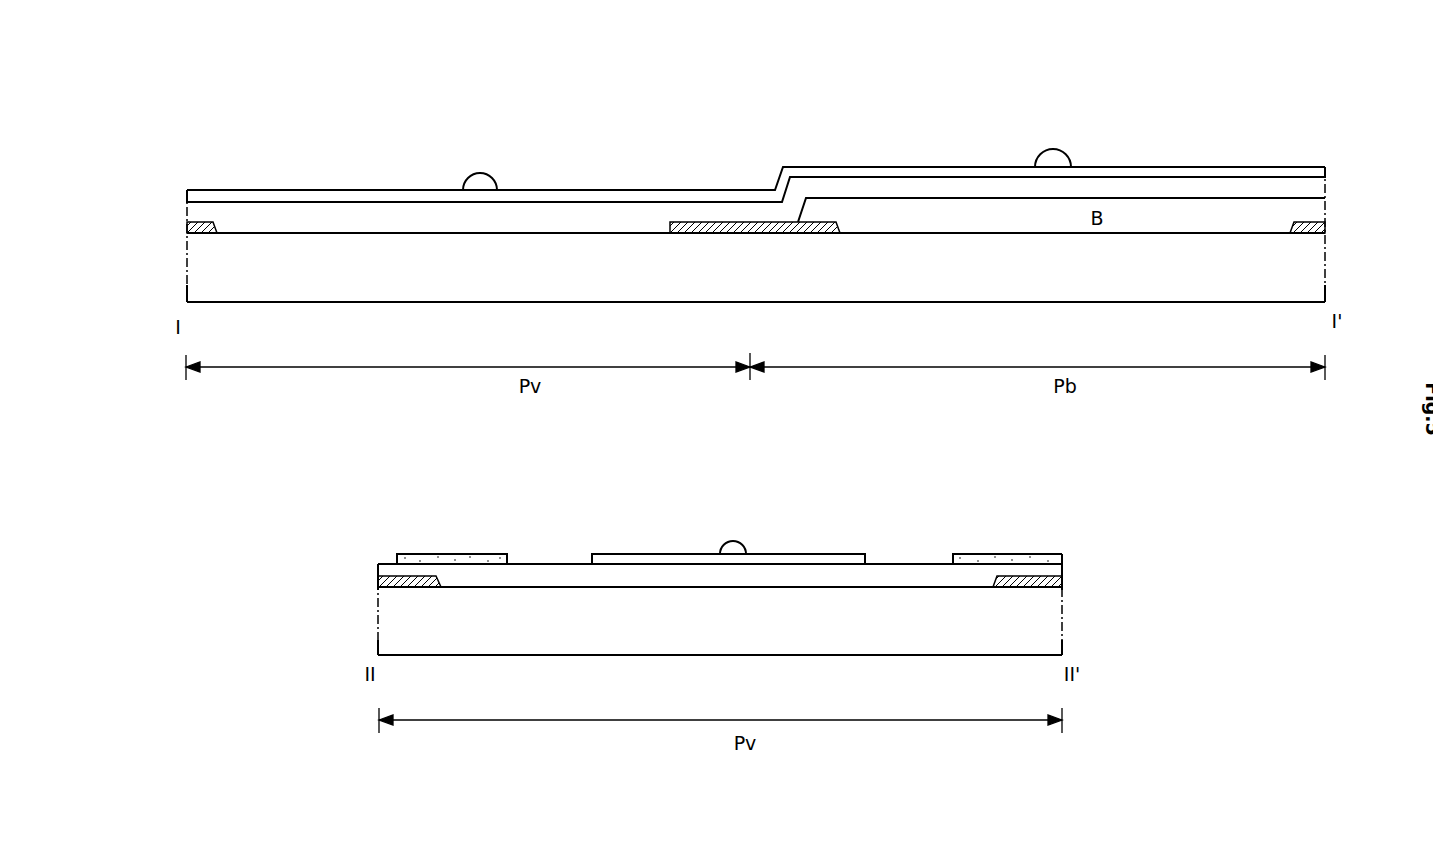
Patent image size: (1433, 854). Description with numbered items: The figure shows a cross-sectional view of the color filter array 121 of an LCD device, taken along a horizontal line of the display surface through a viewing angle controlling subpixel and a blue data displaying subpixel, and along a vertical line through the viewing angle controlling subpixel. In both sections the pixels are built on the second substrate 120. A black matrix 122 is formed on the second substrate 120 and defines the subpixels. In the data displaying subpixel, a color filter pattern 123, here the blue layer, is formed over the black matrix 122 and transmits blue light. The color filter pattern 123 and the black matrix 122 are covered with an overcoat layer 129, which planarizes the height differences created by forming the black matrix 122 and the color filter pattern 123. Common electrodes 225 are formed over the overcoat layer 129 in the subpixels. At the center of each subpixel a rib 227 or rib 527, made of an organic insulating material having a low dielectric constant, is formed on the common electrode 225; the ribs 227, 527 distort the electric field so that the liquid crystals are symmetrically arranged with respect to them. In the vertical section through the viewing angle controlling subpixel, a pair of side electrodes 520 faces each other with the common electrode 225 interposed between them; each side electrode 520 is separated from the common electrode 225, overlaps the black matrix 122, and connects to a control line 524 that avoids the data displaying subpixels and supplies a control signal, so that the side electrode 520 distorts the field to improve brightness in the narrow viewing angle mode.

The second substrate 120 is at (205, 272).
The color filter array 121 is at (1348, 125).
The black matrix 122 is at (190, 227).
The color filter patterns 123 is at (1325, 205).
The overcoat layer 129 is at (203, 207).
The common electrodes 225 is at (190, 190).
The rib 227 is at (1053, 160).
The rib 527 is at (480, 183).
The side electrode 520 is at (492, 553).
The control line 524 is at (410, 553).